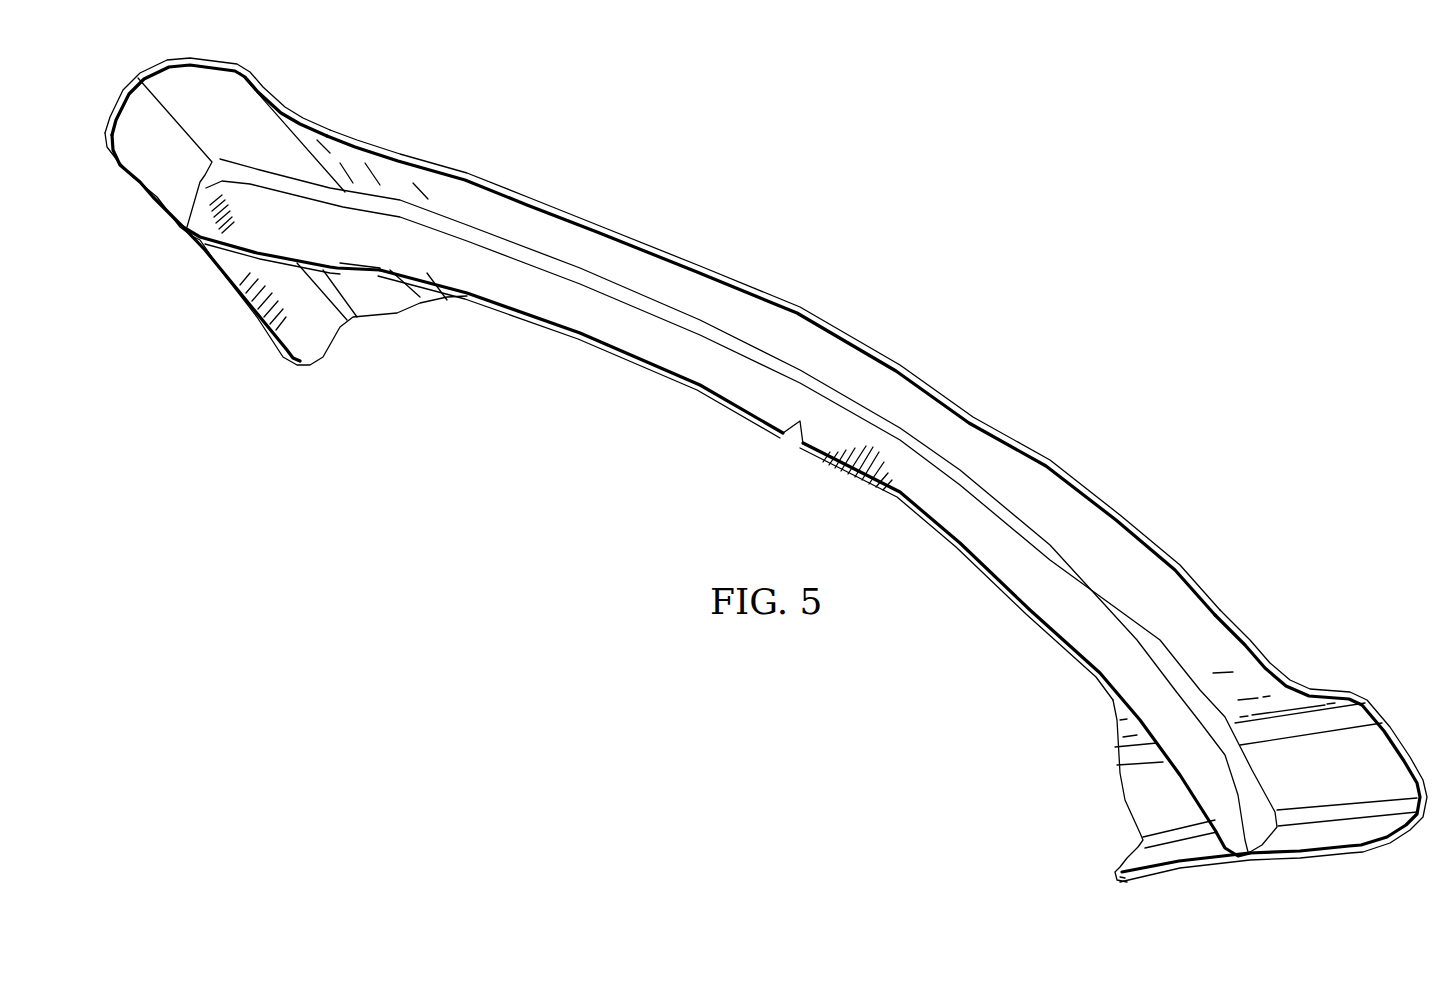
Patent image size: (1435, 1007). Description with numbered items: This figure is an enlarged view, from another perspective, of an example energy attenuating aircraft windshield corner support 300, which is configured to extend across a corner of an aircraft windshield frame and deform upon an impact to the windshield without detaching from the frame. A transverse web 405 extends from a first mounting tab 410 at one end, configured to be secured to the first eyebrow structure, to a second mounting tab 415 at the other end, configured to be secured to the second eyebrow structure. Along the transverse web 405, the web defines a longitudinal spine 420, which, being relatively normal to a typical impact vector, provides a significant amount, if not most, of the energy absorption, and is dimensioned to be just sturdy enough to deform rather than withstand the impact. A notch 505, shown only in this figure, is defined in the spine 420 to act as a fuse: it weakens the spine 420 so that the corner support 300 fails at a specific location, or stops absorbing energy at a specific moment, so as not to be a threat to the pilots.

The energy attenuating aircraft windshield corner support 300 is at (1008, 196).
The transverse web 405 is at (722, 302).
The first mounting tab 410 is at (148, 158).
The second mounting tab 415 is at (1320, 837).
The longitudinal spine 420 is at (710, 431).
The notch 505 is at (797, 442).